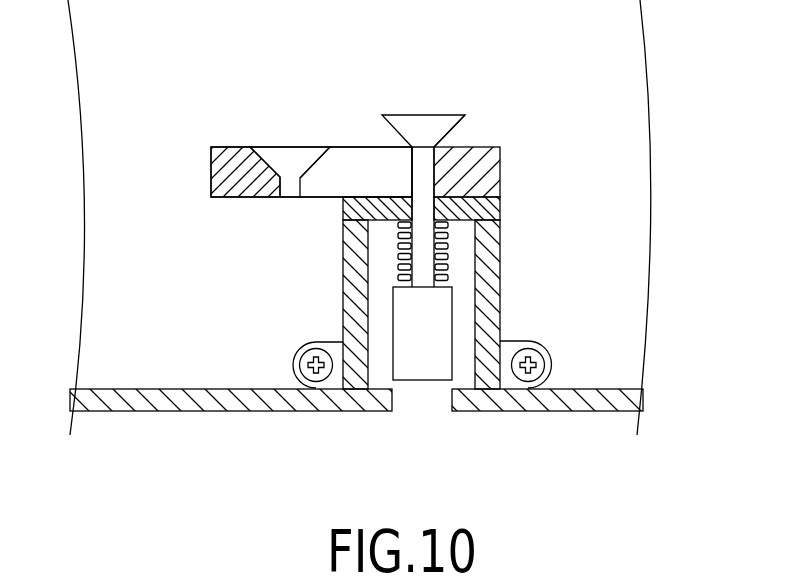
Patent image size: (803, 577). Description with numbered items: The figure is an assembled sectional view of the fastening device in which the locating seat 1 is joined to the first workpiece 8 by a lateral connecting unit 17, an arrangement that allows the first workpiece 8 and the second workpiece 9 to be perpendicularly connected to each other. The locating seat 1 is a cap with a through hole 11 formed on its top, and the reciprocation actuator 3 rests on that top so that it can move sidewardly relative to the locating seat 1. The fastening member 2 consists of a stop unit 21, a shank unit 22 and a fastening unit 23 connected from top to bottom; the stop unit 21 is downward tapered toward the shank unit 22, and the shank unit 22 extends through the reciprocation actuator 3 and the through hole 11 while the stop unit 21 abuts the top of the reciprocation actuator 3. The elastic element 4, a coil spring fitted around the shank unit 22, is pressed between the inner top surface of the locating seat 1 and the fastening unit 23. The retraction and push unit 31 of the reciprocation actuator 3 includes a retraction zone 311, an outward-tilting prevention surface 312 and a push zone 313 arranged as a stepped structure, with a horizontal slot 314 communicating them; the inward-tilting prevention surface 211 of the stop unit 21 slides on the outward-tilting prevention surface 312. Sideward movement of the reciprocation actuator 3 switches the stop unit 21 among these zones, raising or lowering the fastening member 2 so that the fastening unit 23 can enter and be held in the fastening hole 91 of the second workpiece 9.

The locating seat 1 is at (466, 282).
The through hole 11 is at (448, 212).
The lateral connecting unit 17 is at (332, 375).
The fastening member 2 is at (481, 160).
The stop unit 21 is at (418, 125).
The inward-tilting prevention surface 211 is at (450, 130).
The shank unit 22 is at (422, 177).
The fastening unit 23 is at (438, 325).
The reciprocation actuator 3 is at (267, 108).
The retraction and push unit 31 is at (272, 108).
The retraction zone 311 is at (268, 144).
The outward-tilting prevention surface 312 is at (276, 160).
The push zone 313 is at (356, 135).
The horizontal slot 314 is at (353, 170).
The elastic element 4 is at (448, 262).
The first workpiece 8 is at (640, 125).
The second workpiece 9 is at (356, 433).
The fastening hole 91 is at (457, 397).